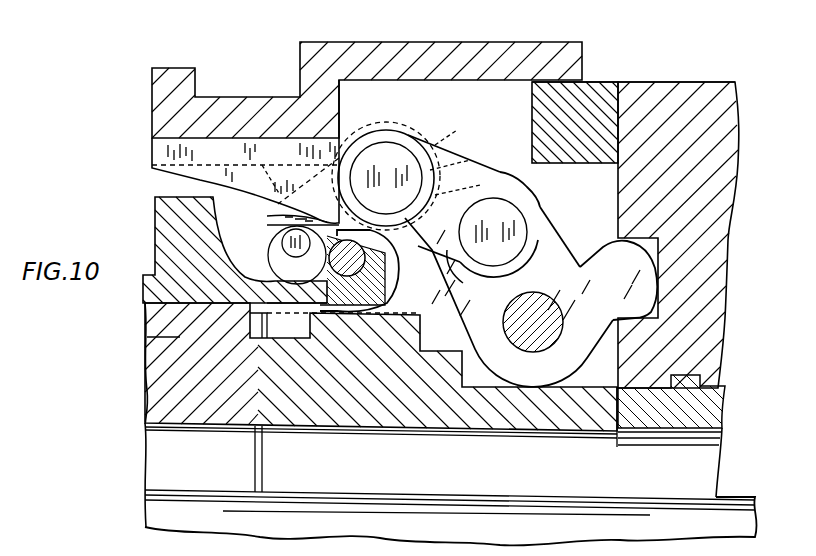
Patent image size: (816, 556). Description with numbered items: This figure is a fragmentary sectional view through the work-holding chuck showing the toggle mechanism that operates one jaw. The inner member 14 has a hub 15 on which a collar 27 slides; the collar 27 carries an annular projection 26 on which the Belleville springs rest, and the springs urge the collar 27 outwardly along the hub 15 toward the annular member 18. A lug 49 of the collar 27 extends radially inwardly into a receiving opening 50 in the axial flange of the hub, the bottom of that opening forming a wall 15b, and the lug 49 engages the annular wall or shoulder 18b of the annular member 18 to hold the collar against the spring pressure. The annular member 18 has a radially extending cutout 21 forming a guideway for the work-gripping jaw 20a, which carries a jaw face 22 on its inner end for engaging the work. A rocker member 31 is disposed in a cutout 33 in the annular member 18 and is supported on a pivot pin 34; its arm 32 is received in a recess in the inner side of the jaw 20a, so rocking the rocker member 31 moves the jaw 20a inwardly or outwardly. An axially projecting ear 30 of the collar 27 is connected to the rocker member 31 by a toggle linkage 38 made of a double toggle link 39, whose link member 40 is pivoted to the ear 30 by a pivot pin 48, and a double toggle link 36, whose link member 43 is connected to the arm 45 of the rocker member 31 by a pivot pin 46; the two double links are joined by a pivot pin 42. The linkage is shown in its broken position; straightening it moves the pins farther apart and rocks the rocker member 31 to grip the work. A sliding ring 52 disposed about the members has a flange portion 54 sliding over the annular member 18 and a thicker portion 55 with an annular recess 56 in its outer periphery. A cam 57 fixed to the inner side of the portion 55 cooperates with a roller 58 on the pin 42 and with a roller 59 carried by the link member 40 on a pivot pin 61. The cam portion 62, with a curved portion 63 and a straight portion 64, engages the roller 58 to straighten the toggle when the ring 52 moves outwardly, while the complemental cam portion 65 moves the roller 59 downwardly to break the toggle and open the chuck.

The inner member 14 is at (145, 328).
The hub 15 is at (147, 337).
The wall 15b is at (252, 325).
The annular member 18 is at (333, 420).
The annular wall or shoulder 18b is at (300, 331).
The work-gripping jaw 20a is at (700, 95).
The cutout 21 is at (632, 82).
The jaw face 22 is at (636, 420).
The annular projection 26 is at (155, 278).
The collar 27 is at (150, 290).
The ear 30 is at (372, 286).
The rocker member 31 is at (506, 176).
The arm 32 is at (642, 276).
The cutout 33 is at (600, 226).
The pivot pin 34 is at (548, 355).
The double toggle link 36 is at (508, 180).
The linkage 38 is at (438, 149).
The double toggle link 39 is at (365, 145).
The link member 40 is at (402, 263).
The pivot pin 42 is at (385, 158).
The link member 43 is at (463, 283).
The arm 45 is at (535, 202).
The pivot pin 46 is at (520, 250).
The pivot pin 48 is at (337, 216).
The lug 49 is at (293, 335).
The receiving opening 50 is at (255, 335).
The sliding ring 52 is at (388, 40).
The flange portion 54 is at (514, 42).
The portion 55 is at (166, 108).
The annular recess 56 is at (254, 97).
The cam 57 is at (158, 138).
The roller 58 is at (450, 160).
The roller 59 is at (282, 222).
The pivot pin 61 is at (290, 243).
The cam portion 62 is at (222, 176).
The curved portion 63 is at (270, 178).
The straight portion 64 is at (213, 186).
The cam portion 65 is at (152, 168).